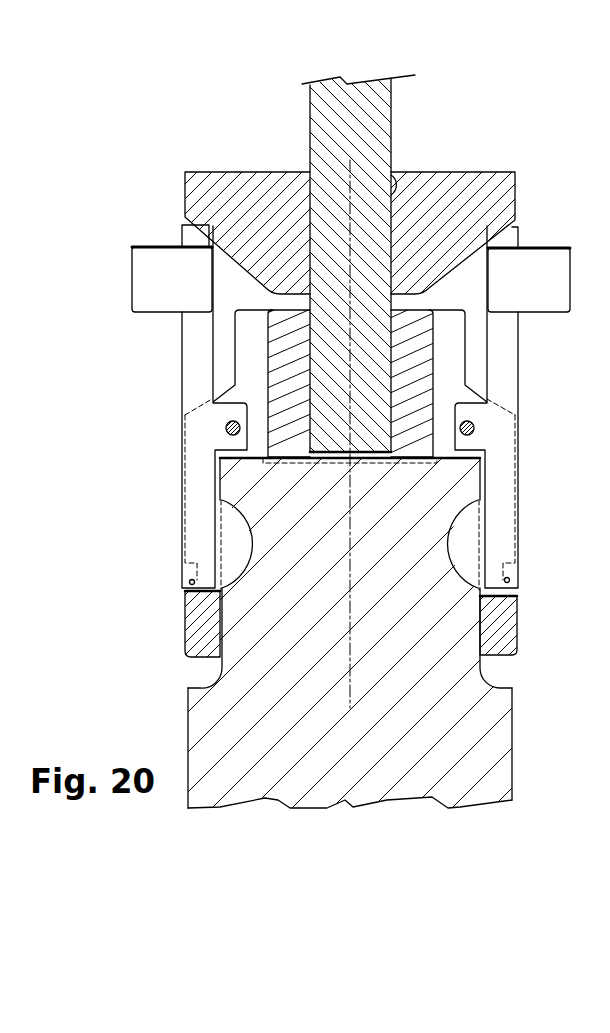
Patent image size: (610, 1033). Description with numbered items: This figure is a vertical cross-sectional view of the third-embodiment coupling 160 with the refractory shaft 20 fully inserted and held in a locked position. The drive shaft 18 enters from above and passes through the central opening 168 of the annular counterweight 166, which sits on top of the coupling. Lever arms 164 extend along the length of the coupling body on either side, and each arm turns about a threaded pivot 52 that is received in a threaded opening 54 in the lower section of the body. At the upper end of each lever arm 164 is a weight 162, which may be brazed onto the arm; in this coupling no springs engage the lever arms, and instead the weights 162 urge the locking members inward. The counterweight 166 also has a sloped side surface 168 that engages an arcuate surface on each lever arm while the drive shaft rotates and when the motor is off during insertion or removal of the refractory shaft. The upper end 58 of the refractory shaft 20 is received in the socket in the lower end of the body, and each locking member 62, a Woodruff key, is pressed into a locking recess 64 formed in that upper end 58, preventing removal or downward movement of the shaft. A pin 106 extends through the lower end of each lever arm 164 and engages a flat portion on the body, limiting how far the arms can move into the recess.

The drive shaft 18 is at (366, 115).
The refractory shaft 20 is at (413, 702).
The pivot 52 is at (226, 430).
The threaded opening 54 is at (228, 426).
The upper end of the refractory shaft 58 is at (427, 602).
The locking member 62 is at (243, 538).
The locking recess 64 is at (245, 561).
The pin 106 is at (190, 584).
The coupling 160 is at (448, 360).
The weight 162 is at (167, 287).
The lever arm 164 is at (202, 348).
The annular counterweight 166 is at (450, 200).
The central opening 168 is at (389, 172).